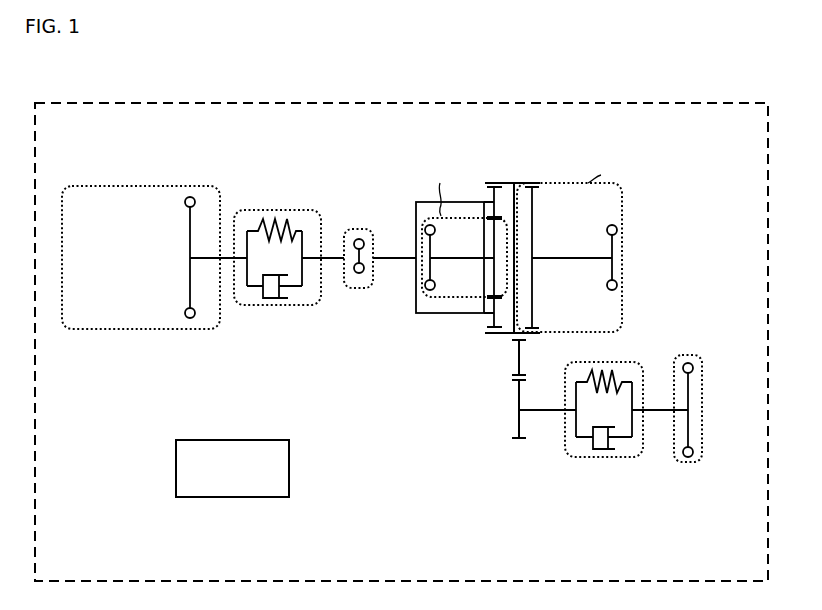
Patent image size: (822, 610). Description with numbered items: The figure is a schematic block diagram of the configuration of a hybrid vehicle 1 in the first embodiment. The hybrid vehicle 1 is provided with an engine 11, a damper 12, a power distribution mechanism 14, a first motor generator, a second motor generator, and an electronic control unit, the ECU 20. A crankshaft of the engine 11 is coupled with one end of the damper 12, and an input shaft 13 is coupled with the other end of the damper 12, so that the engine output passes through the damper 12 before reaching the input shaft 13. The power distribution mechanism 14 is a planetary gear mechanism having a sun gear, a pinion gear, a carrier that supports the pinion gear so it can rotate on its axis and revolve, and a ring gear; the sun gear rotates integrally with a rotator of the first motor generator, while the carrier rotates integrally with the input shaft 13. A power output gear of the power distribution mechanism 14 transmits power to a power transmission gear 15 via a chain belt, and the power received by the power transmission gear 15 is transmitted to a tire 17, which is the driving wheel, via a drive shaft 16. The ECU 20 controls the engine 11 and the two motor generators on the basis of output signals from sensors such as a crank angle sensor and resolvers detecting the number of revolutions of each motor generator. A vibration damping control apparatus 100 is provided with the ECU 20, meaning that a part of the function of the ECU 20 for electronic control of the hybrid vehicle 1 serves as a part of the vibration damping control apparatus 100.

The hybrid vehicle 1 is at (65, 103).
The engine 11 is at (190, 186).
The damper 12 is at (270, 307).
The input shaft 13 is at (363, 228).
The power distribution mechanism 14 is at (495, 160).
The power transmission gear 15 is at (493, 377).
The drive shaft 16 is at (613, 461).
The tire 17 is at (690, 463).
The electronic control unit (ECU) 20 is at (203, 440).
The vibration damping control apparatus 100 is at (337, 486).